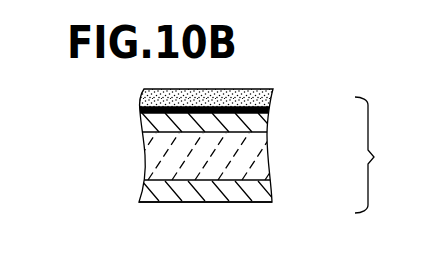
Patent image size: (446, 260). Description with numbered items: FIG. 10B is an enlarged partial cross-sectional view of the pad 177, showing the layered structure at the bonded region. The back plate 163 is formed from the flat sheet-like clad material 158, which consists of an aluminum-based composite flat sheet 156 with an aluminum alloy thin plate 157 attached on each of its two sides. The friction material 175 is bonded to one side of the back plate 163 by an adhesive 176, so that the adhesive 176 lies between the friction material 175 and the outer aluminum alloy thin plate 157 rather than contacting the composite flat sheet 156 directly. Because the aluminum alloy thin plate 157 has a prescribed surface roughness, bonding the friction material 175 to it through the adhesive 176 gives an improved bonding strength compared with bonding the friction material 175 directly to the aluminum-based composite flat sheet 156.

The friction material 175 is at (235, 90).
The adhesive 176 is at (270, 110).
The aluminum alloy thin plate 157 is at (268, 119).
The aluminum-based composite flat sheet 156 is at (268, 157).
The flat sheet-like clad material 158 is at (390, 155).
The pad 177 is at (123, 117).
The back plate 163 is at (177, 206).